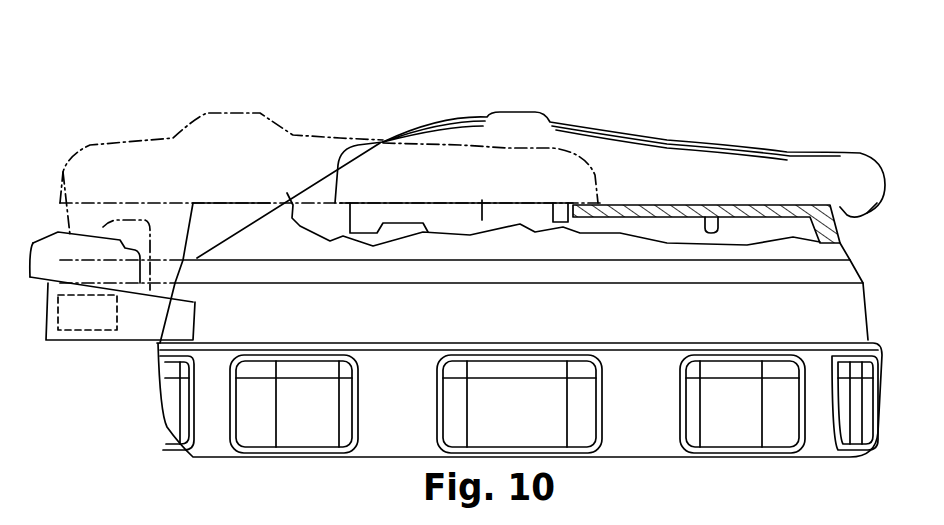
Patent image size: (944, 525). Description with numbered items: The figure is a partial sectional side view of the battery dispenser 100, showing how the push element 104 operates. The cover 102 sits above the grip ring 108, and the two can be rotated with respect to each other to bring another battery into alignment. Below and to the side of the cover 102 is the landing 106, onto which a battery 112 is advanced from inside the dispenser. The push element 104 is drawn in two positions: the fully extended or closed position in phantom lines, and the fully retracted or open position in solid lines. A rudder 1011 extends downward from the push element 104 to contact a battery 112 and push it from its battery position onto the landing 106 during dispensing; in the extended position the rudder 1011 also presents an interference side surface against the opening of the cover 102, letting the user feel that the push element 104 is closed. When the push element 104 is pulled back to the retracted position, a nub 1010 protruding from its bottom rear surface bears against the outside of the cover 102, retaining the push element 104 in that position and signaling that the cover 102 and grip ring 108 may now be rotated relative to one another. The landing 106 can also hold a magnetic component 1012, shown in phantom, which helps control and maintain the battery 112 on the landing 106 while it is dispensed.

The battery dispenser 100 is at (247, 78).
The cover 102 is at (577, 128).
The push element 104 is at (93, 160).
The landing 106 is at (140, 318).
The grip ring 108 is at (233, 447).
The battery 112 is at (58, 257).
The nub 1010 is at (873, 208).
The rudder 1011 is at (168, 240).
The magnetic component 1012 is at (83, 322).